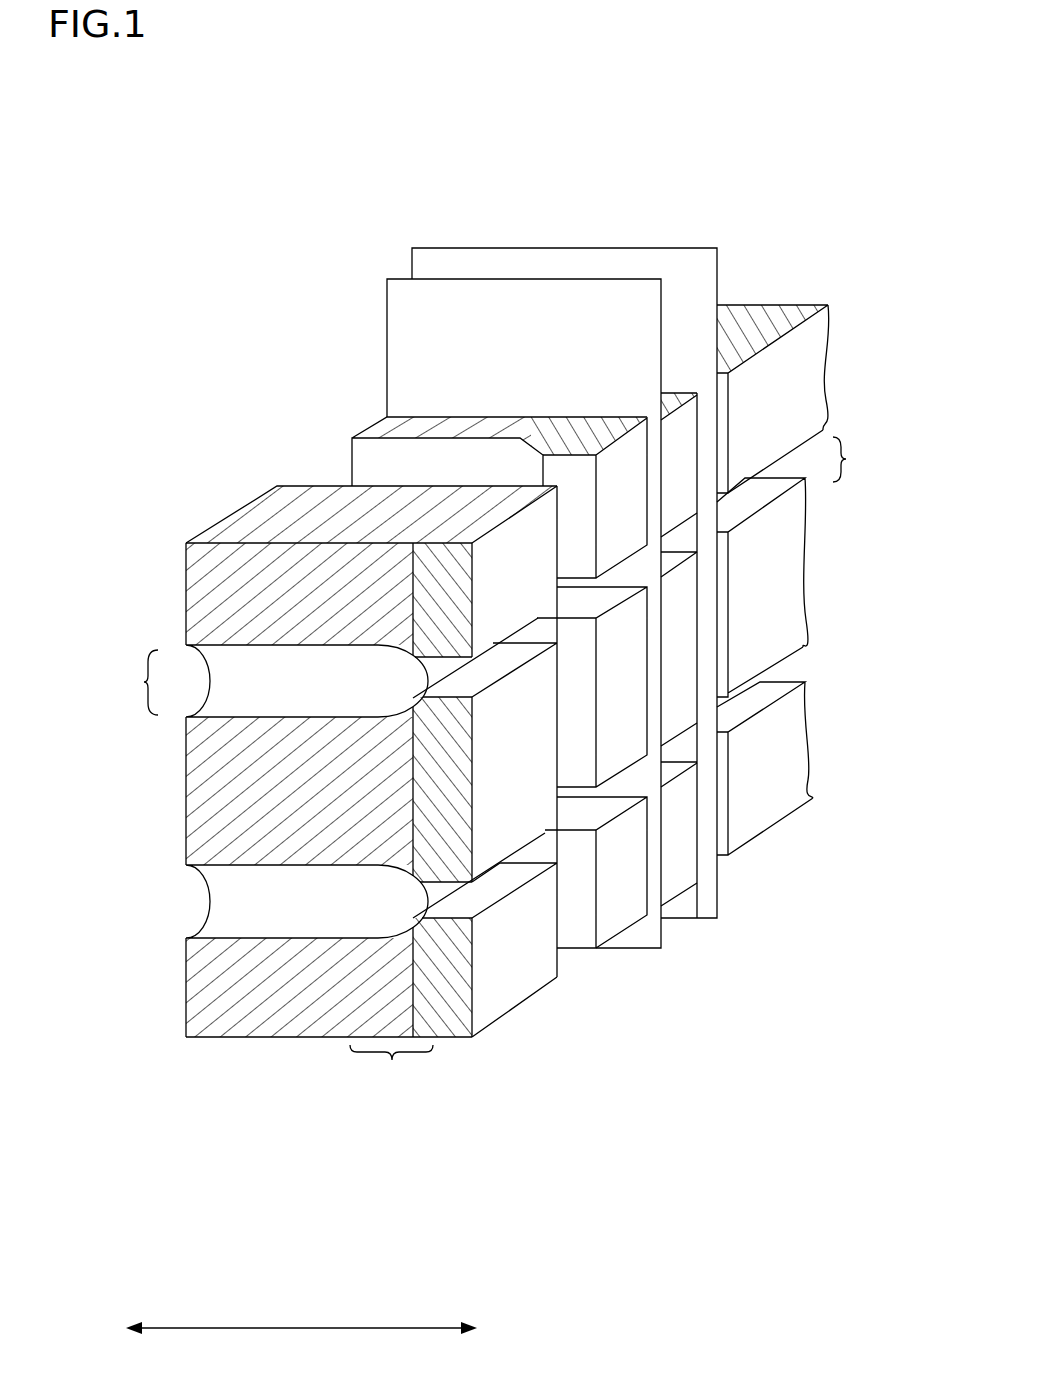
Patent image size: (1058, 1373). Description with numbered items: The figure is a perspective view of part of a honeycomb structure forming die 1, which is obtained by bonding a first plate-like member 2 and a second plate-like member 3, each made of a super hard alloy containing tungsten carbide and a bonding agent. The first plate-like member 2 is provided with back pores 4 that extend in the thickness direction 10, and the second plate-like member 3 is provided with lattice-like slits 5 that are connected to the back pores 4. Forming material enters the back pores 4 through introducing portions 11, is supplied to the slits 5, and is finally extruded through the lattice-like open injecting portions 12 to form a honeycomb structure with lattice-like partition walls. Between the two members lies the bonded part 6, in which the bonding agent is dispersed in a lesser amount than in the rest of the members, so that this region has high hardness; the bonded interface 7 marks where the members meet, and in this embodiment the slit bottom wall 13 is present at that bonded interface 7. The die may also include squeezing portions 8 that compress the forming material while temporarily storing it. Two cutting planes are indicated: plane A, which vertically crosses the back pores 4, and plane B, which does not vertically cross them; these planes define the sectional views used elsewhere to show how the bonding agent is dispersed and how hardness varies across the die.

The honeycomb structure forming die 1 is at (832, 135).
The first plate-like member 2 is at (236, 1048).
The second plate-like member 3 is at (468, 1048).
The back pore 4 is at (228, 900).
The slit 5 is at (806, 670).
The bonded part 6 is at (391, 1077).
The bonded interface 7 is at (433, 518).
The squeezing portion 8 is at (410, 678).
The thickness direction 10 is at (301, 1309).
The introducing portion 11 is at (130, 682).
The injecting portion 12 is at (863, 460).
The slit bottom wall 13 is at (443, 892).
The plane A is at (629, 262).
The plane B is at (478, 300).